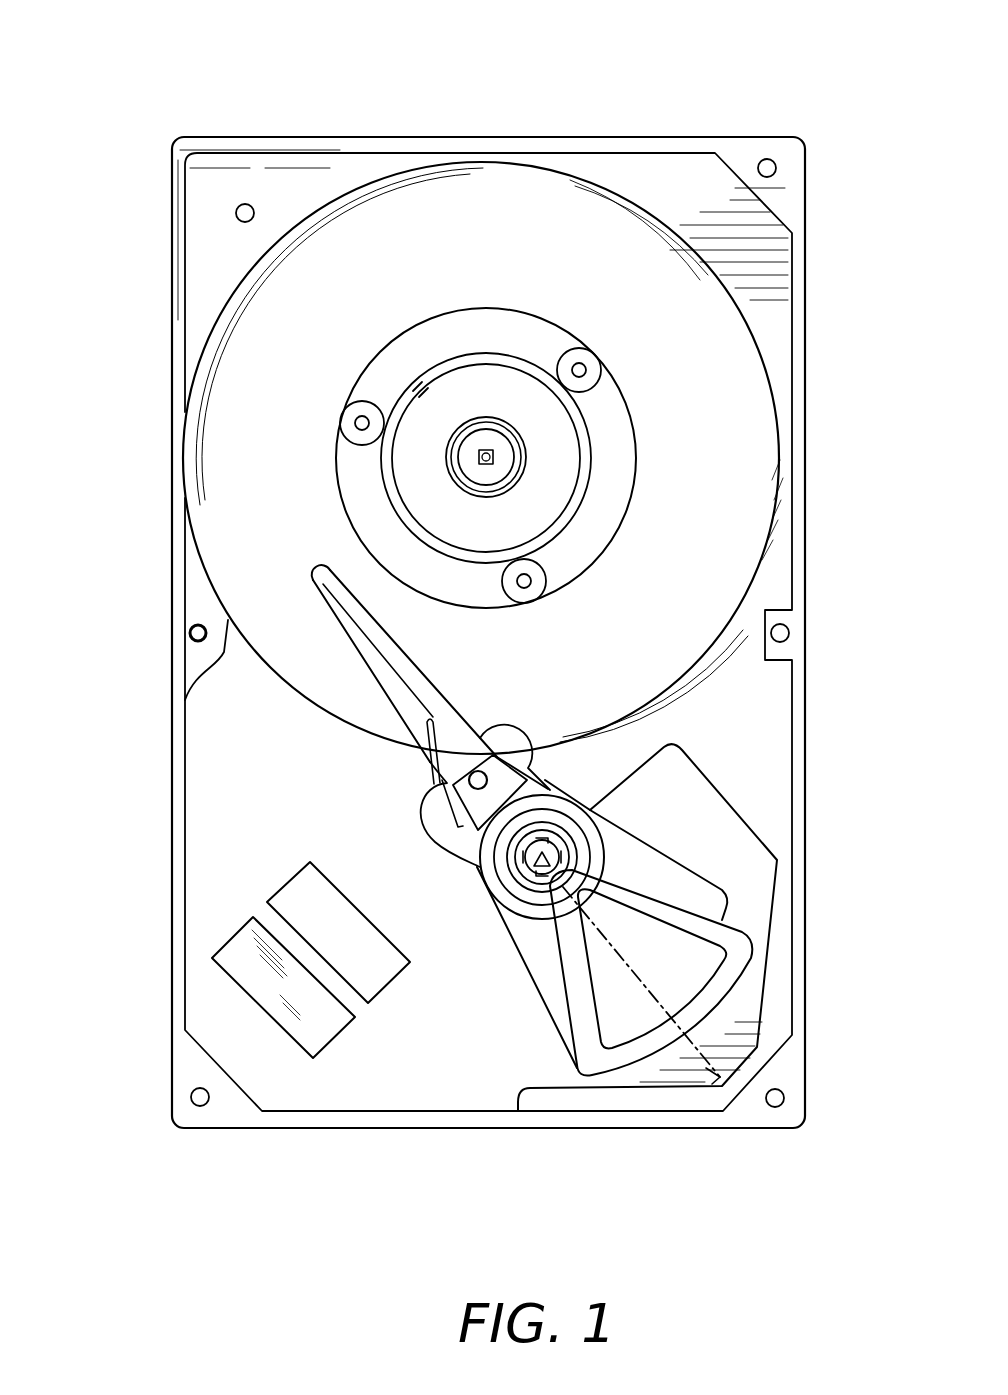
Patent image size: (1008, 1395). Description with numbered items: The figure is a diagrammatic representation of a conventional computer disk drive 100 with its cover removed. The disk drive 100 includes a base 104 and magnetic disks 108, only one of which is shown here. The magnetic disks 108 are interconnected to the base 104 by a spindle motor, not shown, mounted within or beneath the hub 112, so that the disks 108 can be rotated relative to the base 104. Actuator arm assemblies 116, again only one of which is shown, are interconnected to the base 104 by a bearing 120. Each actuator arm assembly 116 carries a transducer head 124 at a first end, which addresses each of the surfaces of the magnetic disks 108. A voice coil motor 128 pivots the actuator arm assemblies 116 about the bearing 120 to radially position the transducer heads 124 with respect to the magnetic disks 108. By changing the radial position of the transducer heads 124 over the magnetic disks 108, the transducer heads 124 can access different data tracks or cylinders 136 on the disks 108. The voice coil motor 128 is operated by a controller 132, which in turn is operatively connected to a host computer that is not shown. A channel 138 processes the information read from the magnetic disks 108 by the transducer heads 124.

The disk drive 100 is at (497, 116).
The base 104 is at (770, 727).
The magnetic disks 108 is at (754, 422).
The hub 112 is at (470, 470).
The actuator arm assemblies 116 is at (360, 657).
The bearing 120 is at (543, 862).
The transducer head 124 is at (312, 592).
The voice coil motor 128 is at (610, 1057).
The controller 132 is at (258, 996).
The data tracks or cylinders 136 is at (765, 528).
The channel 138 is at (297, 893).